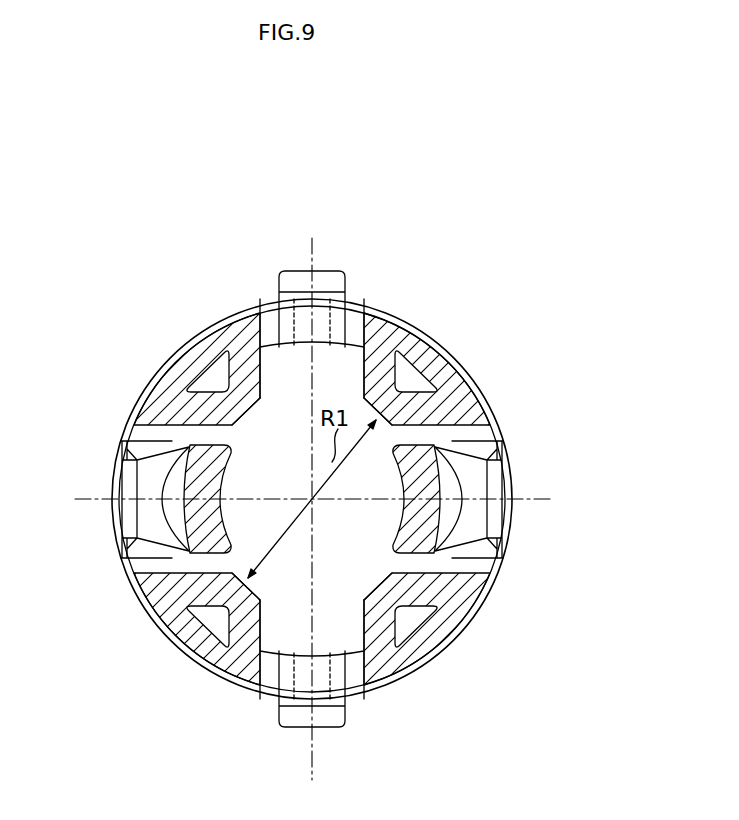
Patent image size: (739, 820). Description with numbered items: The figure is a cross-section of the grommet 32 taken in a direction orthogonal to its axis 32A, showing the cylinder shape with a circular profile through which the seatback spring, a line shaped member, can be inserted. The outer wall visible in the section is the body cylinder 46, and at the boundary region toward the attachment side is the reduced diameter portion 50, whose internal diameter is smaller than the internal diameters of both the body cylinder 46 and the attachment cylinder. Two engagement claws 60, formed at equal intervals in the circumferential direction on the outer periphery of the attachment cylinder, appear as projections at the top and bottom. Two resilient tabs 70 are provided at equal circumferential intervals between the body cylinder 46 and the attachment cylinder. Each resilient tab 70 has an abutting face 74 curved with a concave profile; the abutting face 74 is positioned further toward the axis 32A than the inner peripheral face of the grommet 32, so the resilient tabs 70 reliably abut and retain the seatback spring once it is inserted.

The grommet 32 is at (545, 280).
The axis 32A is at (316, 505).
The body cylinder 46 is at (435, 326).
The reduced diameter portion 50 is at (257, 587).
The engagement claw 60 is at (331, 266).
The resilient tab 70 is at (195, 440).
The abutting face 74 is at (222, 487).